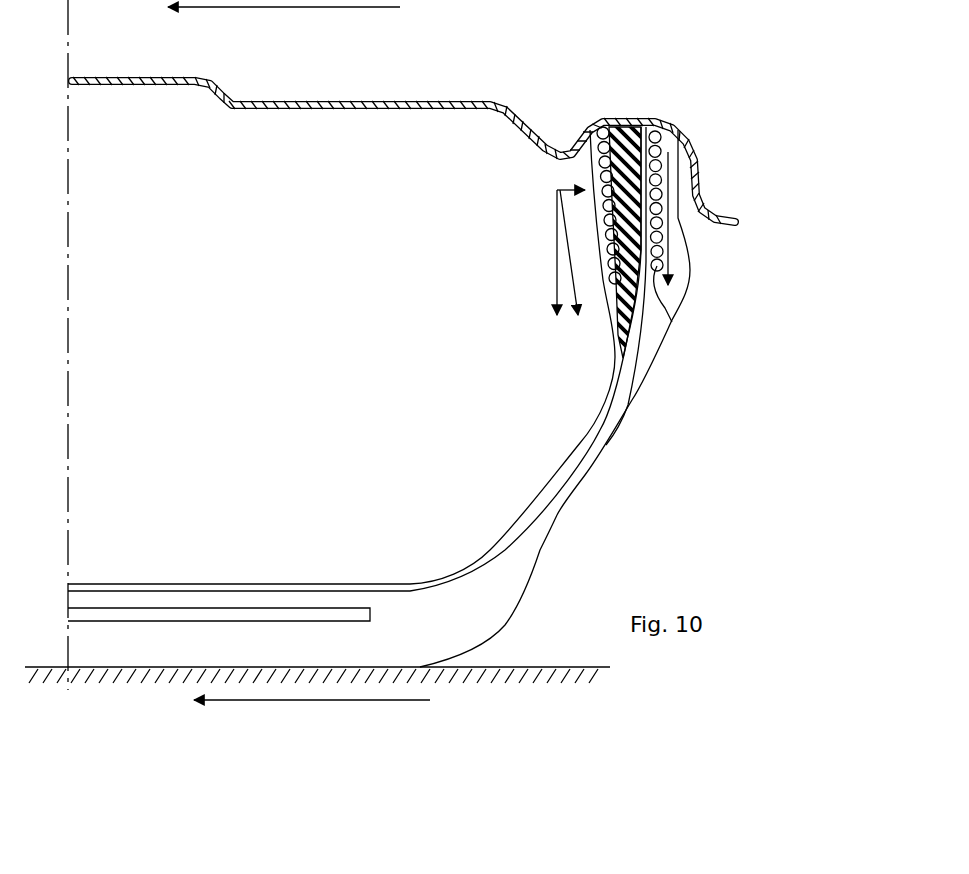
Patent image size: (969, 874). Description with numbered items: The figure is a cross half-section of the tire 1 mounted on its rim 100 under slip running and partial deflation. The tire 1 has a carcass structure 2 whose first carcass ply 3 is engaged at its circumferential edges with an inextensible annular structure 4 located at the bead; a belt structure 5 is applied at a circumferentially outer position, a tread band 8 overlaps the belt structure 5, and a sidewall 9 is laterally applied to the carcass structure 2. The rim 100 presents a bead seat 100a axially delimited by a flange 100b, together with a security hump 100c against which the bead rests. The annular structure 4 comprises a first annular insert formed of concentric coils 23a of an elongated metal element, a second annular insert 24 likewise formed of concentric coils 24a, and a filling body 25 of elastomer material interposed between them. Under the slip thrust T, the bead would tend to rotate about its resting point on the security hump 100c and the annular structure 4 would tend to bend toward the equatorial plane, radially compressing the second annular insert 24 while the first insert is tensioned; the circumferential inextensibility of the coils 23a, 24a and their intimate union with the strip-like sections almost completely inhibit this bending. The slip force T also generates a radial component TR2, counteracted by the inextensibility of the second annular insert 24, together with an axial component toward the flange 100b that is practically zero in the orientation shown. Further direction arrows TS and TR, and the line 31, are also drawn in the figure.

The tire 1 is at (680, 467).
The carcass structure 2 is at (603, 282).
The first carcass ply 3 is at (411, 580).
The inextensible annular structure 4 is at (649, 206).
The belt structure 5 is at (222, 608).
The tread band 8 is at (497, 627).
The sidewall 9 is at (656, 360).
The coils of the first annular insert 23a is at (607, 124).
The second annular insert 24 is at (672, 302).
The coils of the second annular insert 24a is at (656, 264).
The filling body 25 is at (629, 124).
The turned-up ply end 31 is at (603, 412).
The rim 100 is at (453, 100).
The bead seat 100a is at (663, 126).
The flange 100b is at (702, 197).
The security hump 100c is at (553, 159).
The slip thrust T is at (247, 7).
The transverse direction TS is at (557, 190).
The radial direction TR is at (557, 275).
The radial component of the slip force TR2 is at (678, 218).